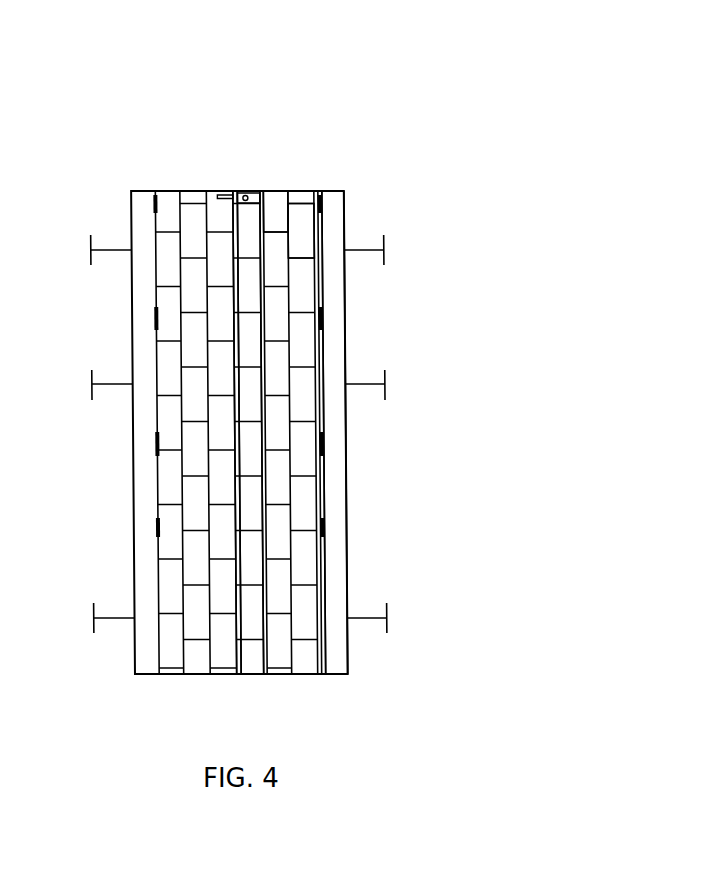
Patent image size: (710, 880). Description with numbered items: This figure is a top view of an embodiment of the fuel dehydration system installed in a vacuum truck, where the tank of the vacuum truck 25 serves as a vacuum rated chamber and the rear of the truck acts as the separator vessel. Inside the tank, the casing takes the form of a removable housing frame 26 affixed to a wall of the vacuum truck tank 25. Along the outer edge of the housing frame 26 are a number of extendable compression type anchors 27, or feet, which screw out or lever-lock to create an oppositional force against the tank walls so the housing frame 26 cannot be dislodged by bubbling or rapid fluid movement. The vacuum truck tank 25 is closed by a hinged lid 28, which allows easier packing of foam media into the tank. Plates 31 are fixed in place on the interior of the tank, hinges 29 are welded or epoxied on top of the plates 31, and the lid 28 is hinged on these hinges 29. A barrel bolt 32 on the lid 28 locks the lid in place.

The vacuum truck tank 25 is at (277, 215).
The housing frame 26 is at (305, 237).
The compression type anchor 27 is at (387, 234).
The hinged lid 28 is at (237, 310).
The hinge 29 is at (322, 320).
The plate 31 is at (326, 463).
The barrel bolt 32 is at (244, 192).